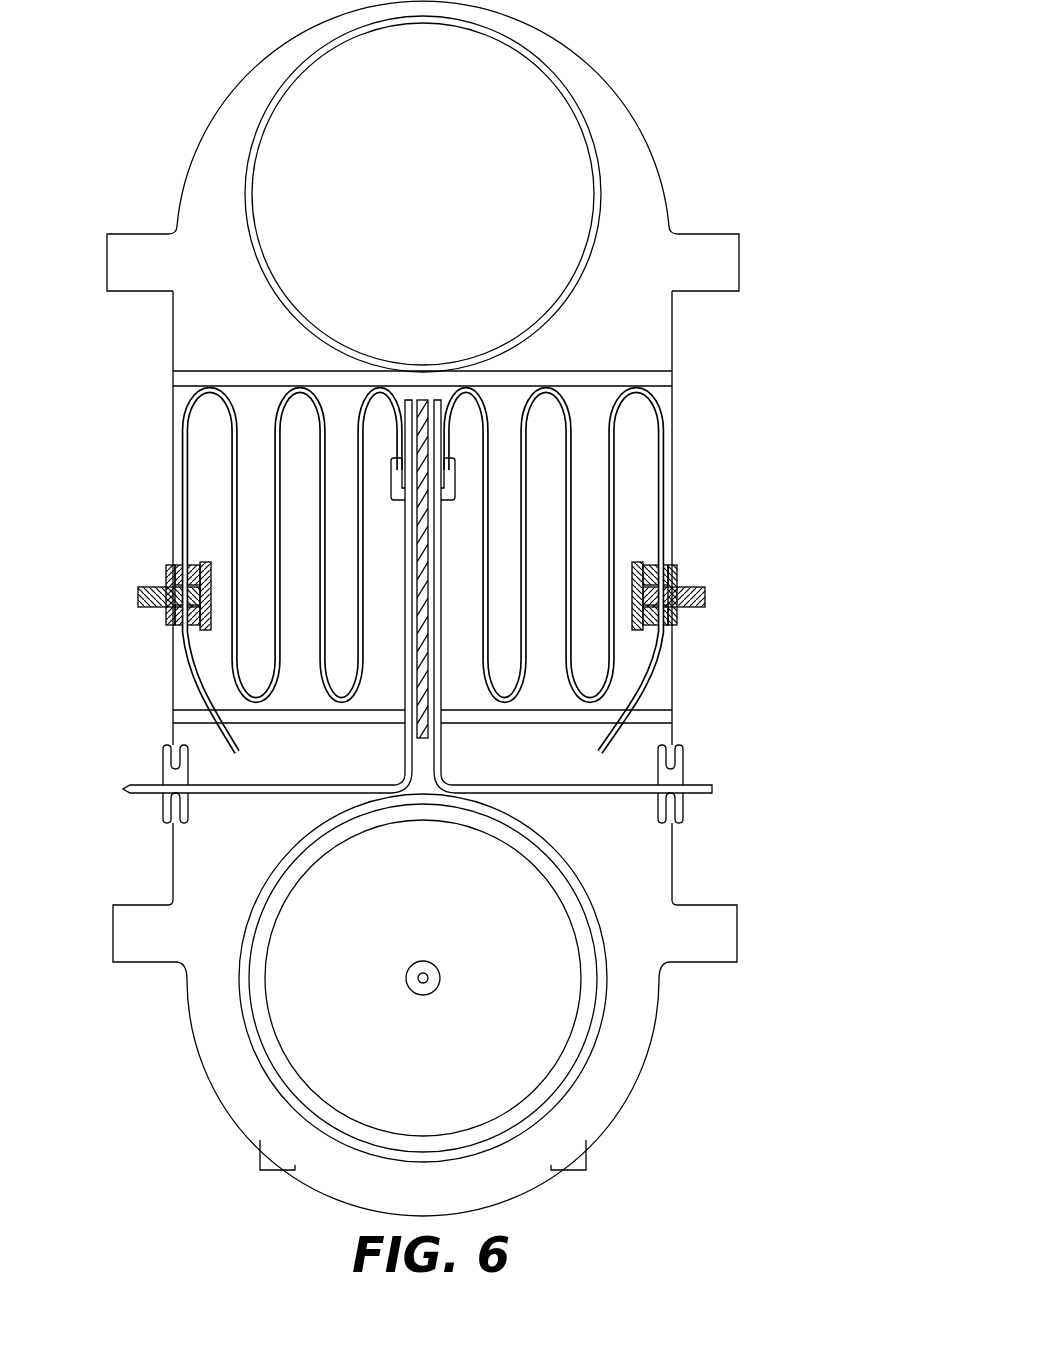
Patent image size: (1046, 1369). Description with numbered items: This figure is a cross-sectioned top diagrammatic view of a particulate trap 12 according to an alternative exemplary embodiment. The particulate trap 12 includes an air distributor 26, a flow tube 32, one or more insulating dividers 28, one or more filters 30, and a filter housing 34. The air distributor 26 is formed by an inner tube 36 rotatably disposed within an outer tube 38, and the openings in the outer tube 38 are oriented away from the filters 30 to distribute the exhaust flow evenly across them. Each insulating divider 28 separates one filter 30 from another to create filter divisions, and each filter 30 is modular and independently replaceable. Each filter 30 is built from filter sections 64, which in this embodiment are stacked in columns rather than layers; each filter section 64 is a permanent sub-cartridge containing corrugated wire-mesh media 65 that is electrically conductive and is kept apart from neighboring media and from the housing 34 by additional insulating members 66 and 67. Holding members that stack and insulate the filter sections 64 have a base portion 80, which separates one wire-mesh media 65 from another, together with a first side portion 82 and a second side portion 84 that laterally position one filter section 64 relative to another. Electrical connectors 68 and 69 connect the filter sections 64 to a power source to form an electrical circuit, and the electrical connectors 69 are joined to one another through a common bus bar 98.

The particulate trap 12 is at (124, 391).
The air distributor 26 is at (607, 1078).
The insulating divider 28 is at (655, 317).
The filter 30 is at (569, 351).
The flow tube 32 is at (242, 231).
The filter housing 34 is at (520, 1194).
The inner tube 36 is at (272, 1027).
The outer tube 38 is at (252, 1055).
The filter section 64 is at (290, 812).
The corrugated wire-mesh media 65 is at (652, 425).
The insulating member 66 is at (421, 400).
The insulating member 67 is at (423, 688).
The electrical connector 68 is at (138, 597).
The electrical connector 69 is at (123, 790).
The base portion 80 is at (592, 408).
The first side portion 82 is at (227, 382).
The second side portion 84 is at (372, 718).
The common bus bar 98 is at (171, 564).